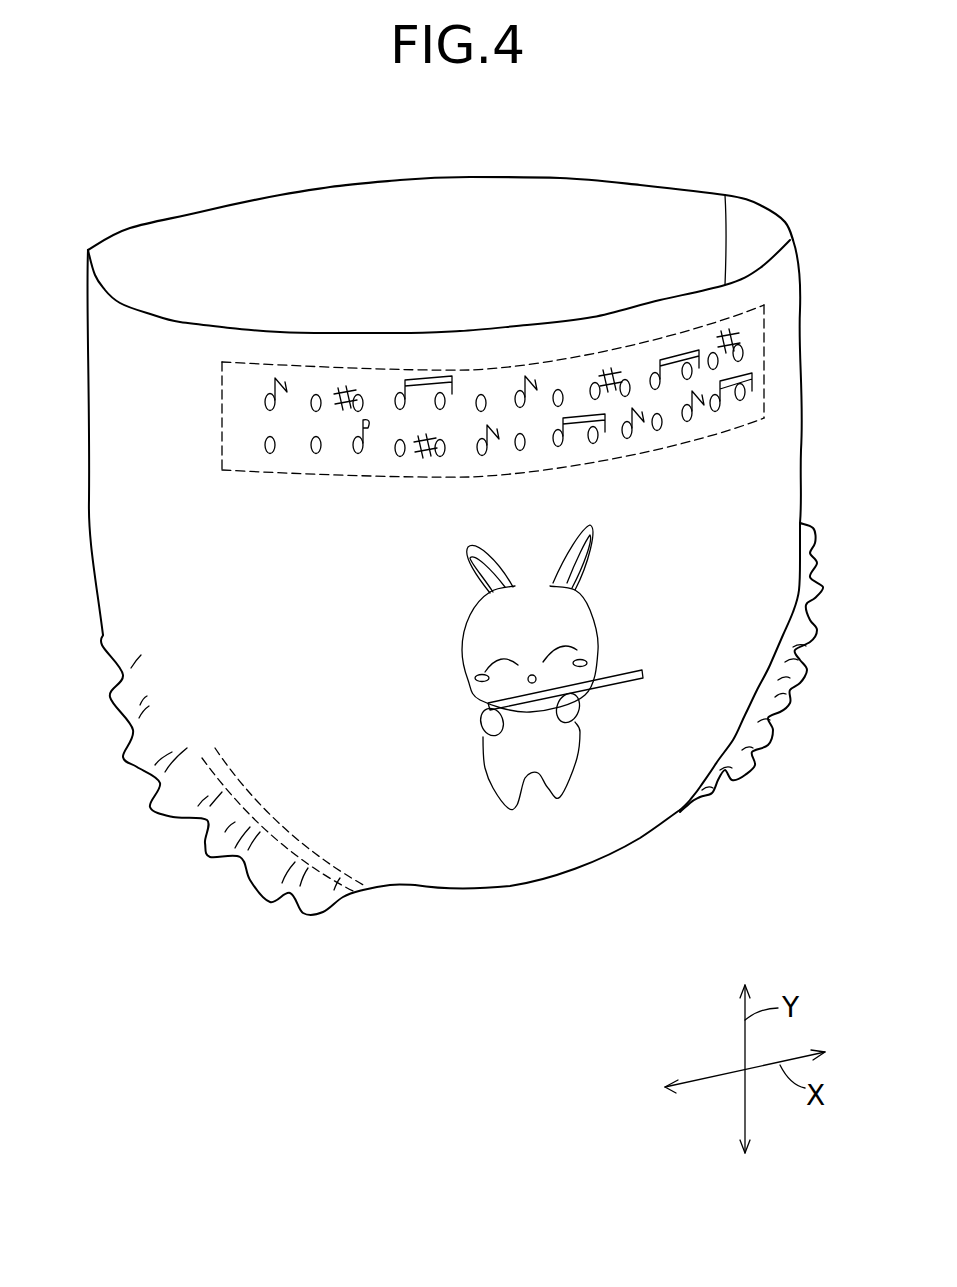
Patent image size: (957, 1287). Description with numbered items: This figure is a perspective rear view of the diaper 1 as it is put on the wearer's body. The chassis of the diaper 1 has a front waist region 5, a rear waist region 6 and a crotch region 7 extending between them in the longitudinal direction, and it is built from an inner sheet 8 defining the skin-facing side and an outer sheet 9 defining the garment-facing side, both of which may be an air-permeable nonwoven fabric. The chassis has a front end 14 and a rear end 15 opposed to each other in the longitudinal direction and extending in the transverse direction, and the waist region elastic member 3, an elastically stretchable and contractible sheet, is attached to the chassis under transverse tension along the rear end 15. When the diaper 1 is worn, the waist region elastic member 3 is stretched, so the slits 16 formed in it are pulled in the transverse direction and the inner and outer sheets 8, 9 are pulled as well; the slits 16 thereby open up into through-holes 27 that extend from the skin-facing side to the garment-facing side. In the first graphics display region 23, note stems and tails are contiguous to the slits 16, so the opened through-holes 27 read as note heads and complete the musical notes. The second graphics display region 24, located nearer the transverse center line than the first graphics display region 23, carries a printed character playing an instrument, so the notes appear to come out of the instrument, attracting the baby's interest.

The diaper 1 is at (690, 157).
The waist region elastic member 3 is at (768, 353).
The front waist region 5 is at (343, 200).
The rear waist region 6 is at (135, 357).
The crotch region 7 is at (540, 867).
The inner sheet 8 is at (297, 226).
The outer sheet 9 is at (417, 855).
The front end 14 is at (405, 180).
The rear end 15 is at (517, 327).
The slits 16 is at (217, 434).
The first graphics display region 23 is at (735, 410).
The second graphics display region 24 is at (555, 783).
The through-holes 27 is at (268, 402).